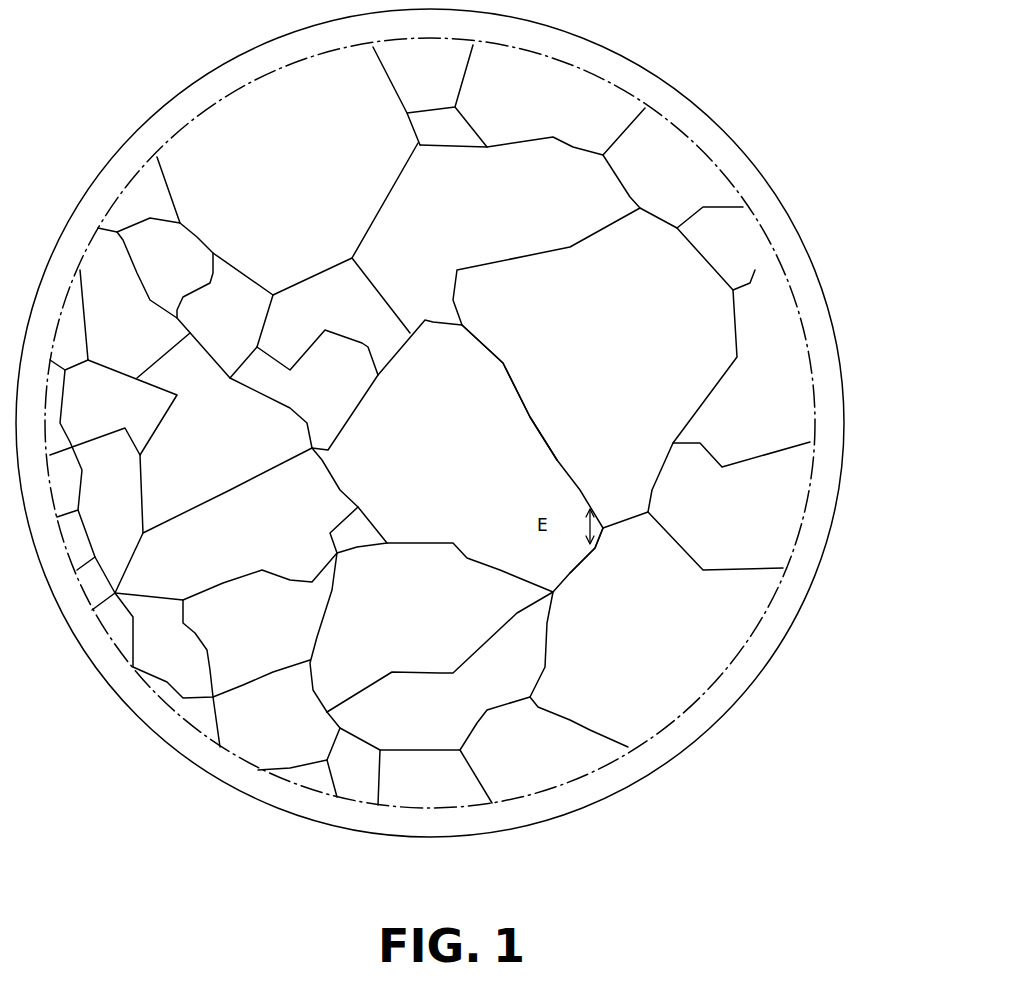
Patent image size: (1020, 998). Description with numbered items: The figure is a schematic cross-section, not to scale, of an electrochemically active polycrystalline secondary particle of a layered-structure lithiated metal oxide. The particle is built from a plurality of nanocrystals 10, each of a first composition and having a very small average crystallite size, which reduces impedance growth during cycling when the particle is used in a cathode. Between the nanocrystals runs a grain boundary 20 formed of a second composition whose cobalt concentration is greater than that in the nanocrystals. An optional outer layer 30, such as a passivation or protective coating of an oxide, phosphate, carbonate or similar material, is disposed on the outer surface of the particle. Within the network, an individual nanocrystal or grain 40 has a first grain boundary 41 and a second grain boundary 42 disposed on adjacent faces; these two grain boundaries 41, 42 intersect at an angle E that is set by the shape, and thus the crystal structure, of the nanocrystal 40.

The nanocrystals 10 is at (810, 347).
The grain boundary 20 is at (773, 457).
The outer layer 30 is at (820, 570).
The nanocrystal/grain 40 is at (431, 450).
The first grain boundary 41 is at (557, 460).
The second grain boundary 42 is at (597, 549).